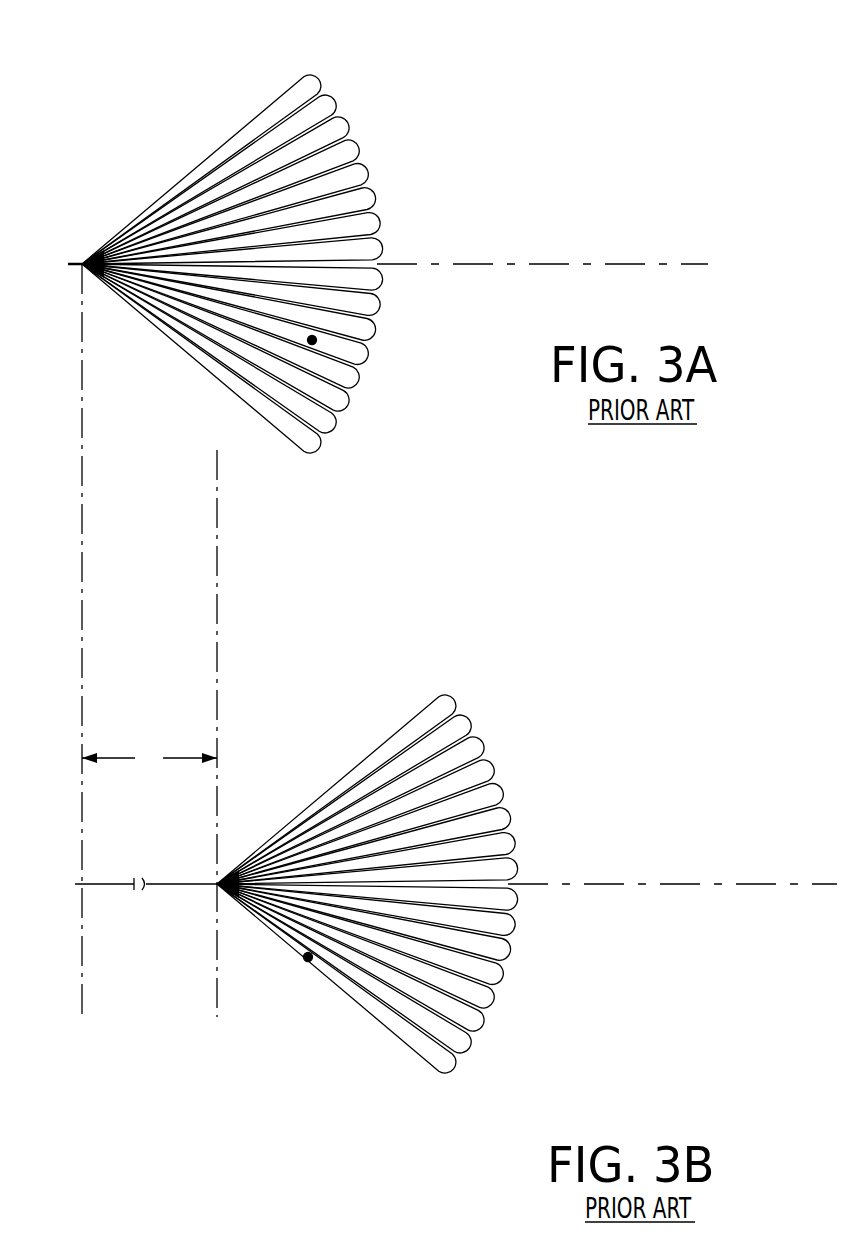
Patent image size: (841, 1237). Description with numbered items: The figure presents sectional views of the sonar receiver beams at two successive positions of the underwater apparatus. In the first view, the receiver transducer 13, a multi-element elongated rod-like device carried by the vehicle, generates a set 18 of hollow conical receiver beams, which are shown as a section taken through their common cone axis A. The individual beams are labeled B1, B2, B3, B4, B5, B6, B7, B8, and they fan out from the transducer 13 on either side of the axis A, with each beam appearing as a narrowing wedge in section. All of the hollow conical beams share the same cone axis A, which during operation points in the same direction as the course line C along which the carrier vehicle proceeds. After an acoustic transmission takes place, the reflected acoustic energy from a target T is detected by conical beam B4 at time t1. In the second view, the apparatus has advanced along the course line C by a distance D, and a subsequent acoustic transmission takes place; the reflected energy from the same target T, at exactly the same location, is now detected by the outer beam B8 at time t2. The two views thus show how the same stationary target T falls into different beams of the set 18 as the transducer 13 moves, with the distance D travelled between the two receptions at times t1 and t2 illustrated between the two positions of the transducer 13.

In FIG. 3A, the receiver transducer 13 is at (77, 258).
In FIG. 3B, the receiver transducer 13 is at (207, 880).
In FIG. 3A, the set of hollow conical receiver beams 18 is at (260, 266).
In FIG. 3B, the set of hollow conical receiver beams 18 is at (395, 886).
In FIG. 3A, the hollow conical beam B1 is at (256, 266).
In FIG. 3B, the hollow conical beam B1 is at (391, 886).
In FIG. 3A, the hollow conical beam B2 is at (260, 263).
In FIG. 3B, the hollow conical beam B2 is at (395, 883).
In FIG. 3A, the hollow conical beam B3 is at (251, 263).
In FIG. 3B, the hollow conical beam B3 is at (386, 883).
In FIG. 3A, the hollow conical beam B4 is at (251, 261).
In FIG. 3B, the hollow conical beam B4 is at (386, 881).
In FIG. 3A, the hollow conical beam B5 is at (237, 263).
In FIG. 3B, the hollow conical beam B5 is at (372, 883).
In FIG. 3A, the hollow conical beam B6 is at (234, 262).
In FIG. 3B, the hollow conical beam B6 is at (369, 882).
In FIG. 3A, the hollow conical beam B7 is at (217, 265).
In FIG. 3B, the hollow conical beam B7 is at (352, 885).
In FIG. 3A, the hollow conical beam B8 is at (201, 266).
In FIG. 3B, the hollow conical beam B8 is at (336, 886).
In FIG. 3A, the cone axis A is at (473, 264).
In FIG. 3B, the cone axis A is at (607, 884).
In FIG. 3A, the course line C is at (692, 265).
In FIG. 3B, the course line C is at (824, 884).
In FIG. 3A, the target T is at (312, 340).
In FIG. 3B, the target T is at (308, 957).
In FIG. 3B, the distance D is at (149, 759).
In FIG. 3B, the time t1 is at (77, 658).
In FIG. 3B, the time t2 is at (212, 751).